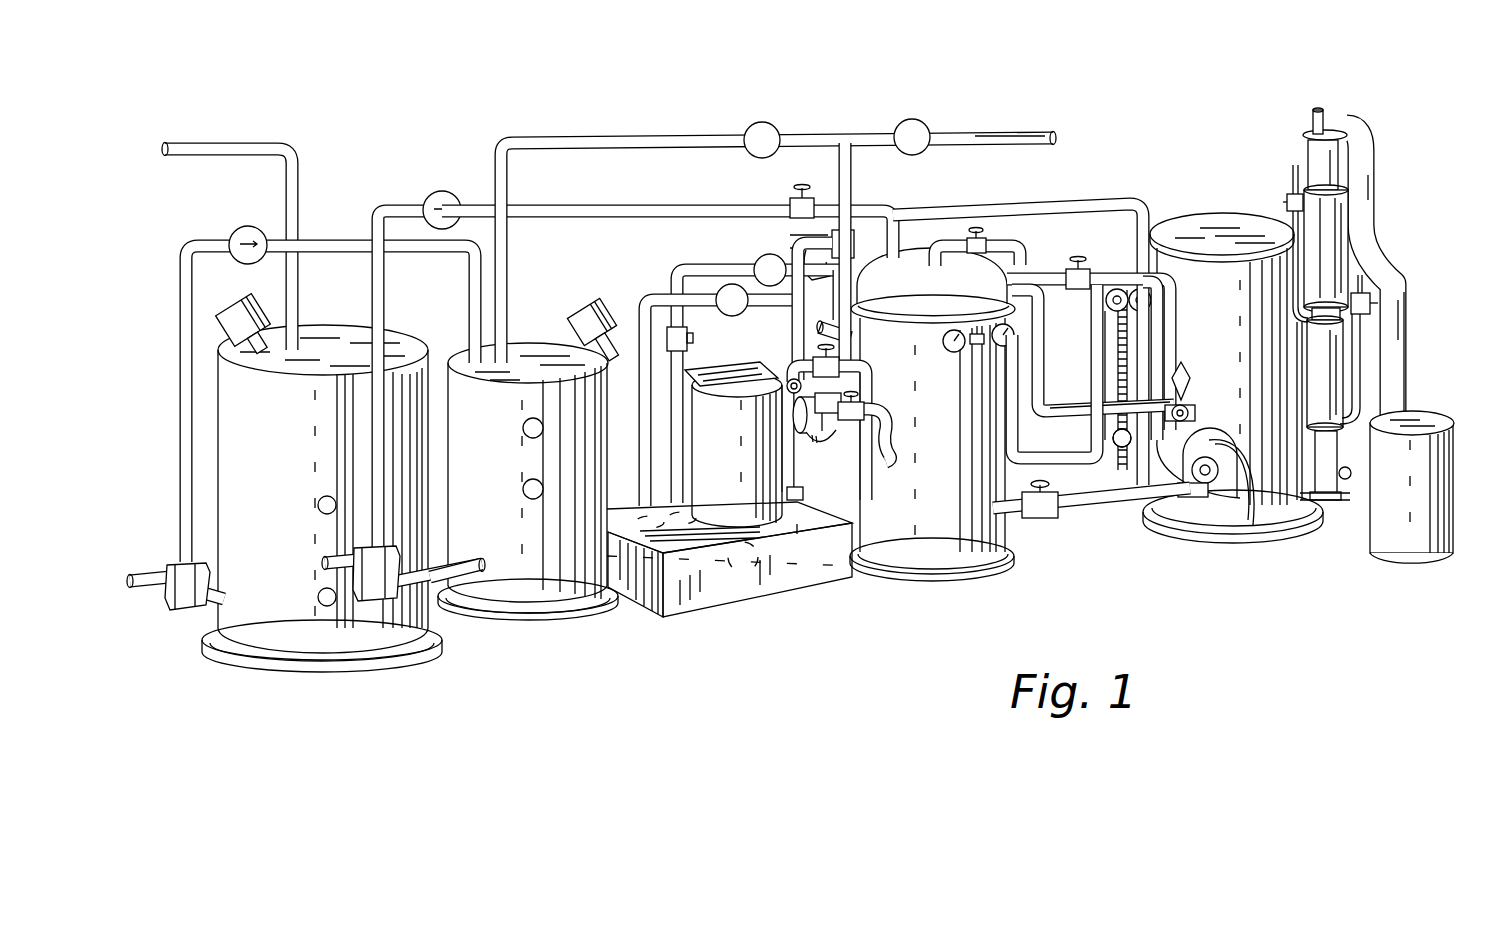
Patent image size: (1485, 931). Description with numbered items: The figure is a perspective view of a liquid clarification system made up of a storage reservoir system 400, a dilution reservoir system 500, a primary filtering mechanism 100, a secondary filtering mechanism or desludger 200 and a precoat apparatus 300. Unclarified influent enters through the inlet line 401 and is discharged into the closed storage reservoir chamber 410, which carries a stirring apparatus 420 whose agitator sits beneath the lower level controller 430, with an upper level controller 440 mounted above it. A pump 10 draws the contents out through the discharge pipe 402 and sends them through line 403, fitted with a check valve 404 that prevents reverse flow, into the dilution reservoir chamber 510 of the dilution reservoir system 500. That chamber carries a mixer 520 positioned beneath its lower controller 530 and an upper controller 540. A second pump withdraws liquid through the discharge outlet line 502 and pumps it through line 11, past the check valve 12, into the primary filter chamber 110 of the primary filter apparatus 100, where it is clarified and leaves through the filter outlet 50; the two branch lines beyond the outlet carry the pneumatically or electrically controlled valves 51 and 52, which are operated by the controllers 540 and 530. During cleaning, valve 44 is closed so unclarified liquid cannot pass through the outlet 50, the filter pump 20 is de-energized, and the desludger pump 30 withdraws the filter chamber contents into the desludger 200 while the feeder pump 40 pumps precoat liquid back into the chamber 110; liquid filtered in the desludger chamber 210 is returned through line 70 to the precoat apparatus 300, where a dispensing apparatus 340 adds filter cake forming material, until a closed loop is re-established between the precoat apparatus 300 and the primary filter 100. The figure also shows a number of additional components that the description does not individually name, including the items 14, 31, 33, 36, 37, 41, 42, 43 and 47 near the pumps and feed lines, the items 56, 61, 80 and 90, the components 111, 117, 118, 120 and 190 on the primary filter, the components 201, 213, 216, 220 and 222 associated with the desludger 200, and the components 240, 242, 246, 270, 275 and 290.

The pump 10 is at (160, 568).
The line 11 is at (686, 180).
The check valve 12 is at (440, 190).
The shut-off valve 14 is at (795, 186).
The filter pump 20 is at (842, 464).
The desludger pump 30 is at (1214, 455).
The valve 31 is at (645, 295).
The flow meter 33 is at (712, 284).
The heat exchanger coil 36 is at (1172, 293).
The union fitting 37 is at (1192, 376).
The feeder pump 40 is at (824, 432).
The nozzle fitting 41 is at (808, 336).
The reagent container 42 is at (775, 455).
The flow meter 43 is at (772, 254).
The valve 44 is at (856, 246).
The fitting 47 is at (784, 378).
The filter outlet 50 is at (852, 174).
The valve 51 is at (769, 122).
The valve 52 is at (918, 120).
The return line 56 is at (1045, 358).
The transfer line 61 is at (930, 212).
The line 70 is at (1034, 470).
The control box 80 is at (690, 350).
The collection drum 90 is at (1372, 552).
The primary filtering mechanism 100 is at (914, 578).
The primary filter chamber 110 is at (896, 560).
The tank top fitting 111 is at (918, 270).
The outlet line 117 is at (1088, 494).
The outlet valve 118 is at (1044, 520).
The valve 120 is at (860, 367).
The pressure gauges 190 is at (975, 346).
The secondary filtering mechanism or desludger 200 is at (1216, 542).
The union fitting 201 is at (1194, 412).
The desludger chamber 210 is at (1225, 258).
The connecting line 213 is at (1112, 418).
The coil inlet 216 is at (1108, 300).
The hose 220 is at (1262, 500).
The coil outlet 222 is at (1125, 447).
The exhaust conduit 240 is at (1352, 246).
The fitting 242 is at (1350, 480).
The vent stub 246 is at (1335, 120).
The filter housing 270 is at (1350, 265).
The bypass tube 275 is at (1408, 310).
The lower filter housing 290 is at (1350, 374).
The precoat apparatus 300 is at (722, 612).
The dispensing apparatus 340 is at (745, 376).
The storage reservoir system 400 is at (236, 658).
The inlet line 401 is at (300, 178).
The discharge pipe 402 is at (194, 610).
The line 403 is at (324, 240).
The check valve 404 is at (248, 226).
The storage reservoir chamber 410 is at (290, 630).
The stirring apparatus 420 is at (238, 300).
The lower level controller 430 is at (332, 606).
The upper level controller 440 is at (318, 508).
The dilution reservoir system 500 is at (486, 620).
The discharge outlet line 502 is at (440, 565).
The dilution reservoir chamber 510 is at (560, 588).
The mixer 520 is at (582, 300).
The lower controller 530 is at (523, 485).
The upper controller 540 is at (523, 424).